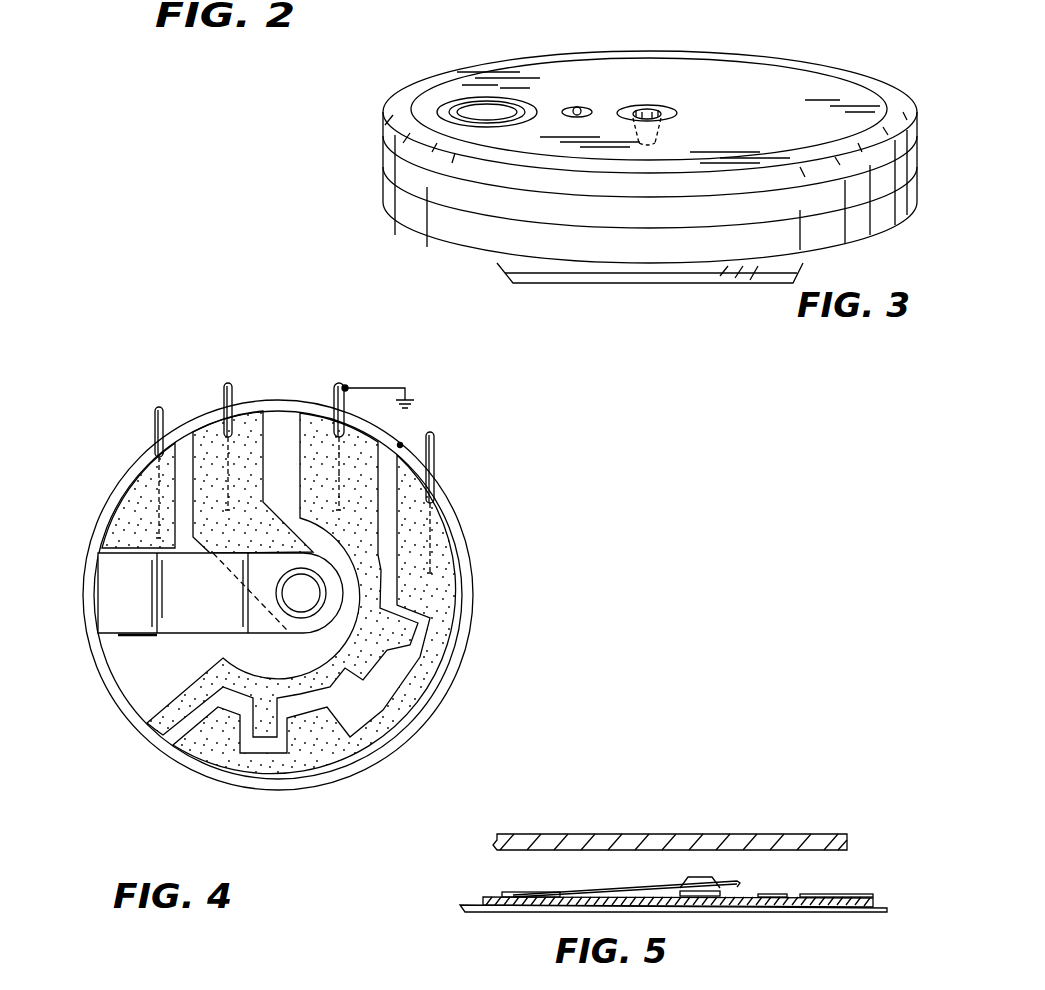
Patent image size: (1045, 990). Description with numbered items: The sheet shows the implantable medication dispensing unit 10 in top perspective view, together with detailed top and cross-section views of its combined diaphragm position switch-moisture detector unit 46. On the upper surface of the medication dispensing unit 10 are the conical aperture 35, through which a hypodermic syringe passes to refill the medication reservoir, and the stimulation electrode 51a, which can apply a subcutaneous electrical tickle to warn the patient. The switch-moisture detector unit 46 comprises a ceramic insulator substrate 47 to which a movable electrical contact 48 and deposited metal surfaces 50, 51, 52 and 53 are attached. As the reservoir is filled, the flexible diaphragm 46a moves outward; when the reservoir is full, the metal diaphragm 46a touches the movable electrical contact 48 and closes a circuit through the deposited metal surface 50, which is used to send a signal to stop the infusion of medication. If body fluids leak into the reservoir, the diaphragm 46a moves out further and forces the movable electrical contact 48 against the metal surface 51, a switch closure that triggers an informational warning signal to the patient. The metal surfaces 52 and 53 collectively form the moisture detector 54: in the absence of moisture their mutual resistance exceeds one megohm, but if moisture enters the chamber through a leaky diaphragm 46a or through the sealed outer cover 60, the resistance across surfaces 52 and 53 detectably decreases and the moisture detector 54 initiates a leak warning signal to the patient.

In FIG. 3, the medication dispensing unit 10 is at (862, 60).
In FIG. 3, the conical aperture 35 is at (650, 107).
In FIG. 3, the stimulation electrode 51a is at (623, 87).
In FIG. 4, the combined diaphragm position switch-moisture detector unit 46 is at (515, 689).
In FIG. 5, the combined diaphragm position switch-moisture detector unit 46 is at (640, 839).
In FIG. 5, the flexible diaphragm 46a is at (789, 823).
In FIG. 4, the ceramic insulator substrate 47 is at (118, 688).
In FIG. 5, the ceramic insulator substrate 47 is at (490, 897).
In FIG. 4, the movable electrical contact 48 is at (212, 604).
In FIG. 5, the movable electrical contact 48 is at (645, 887).
In FIG. 4, the deposited metal surface 50 is at (123, 508).
In FIG. 5, the deposited metal surface 50 is at (518, 893).
In FIG. 4, the metal surface 51 is at (208, 437).
In FIG. 5, the metal surface 51 is at (740, 897).
In FIG. 4, the deposited metal surface 52 is at (377, 600).
In FIG. 5, the deposited metal surface 52 is at (773, 897).
In FIG. 4, the deposited metal surface 53 is at (447, 587).
In FIG. 5, the deposited metal surface 53 is at (840, 897).
In FIG. 4, the moisture detector 54 is at (486, 578).
In FIG. 5, the sealed outer cover 60 is at (473, 910).